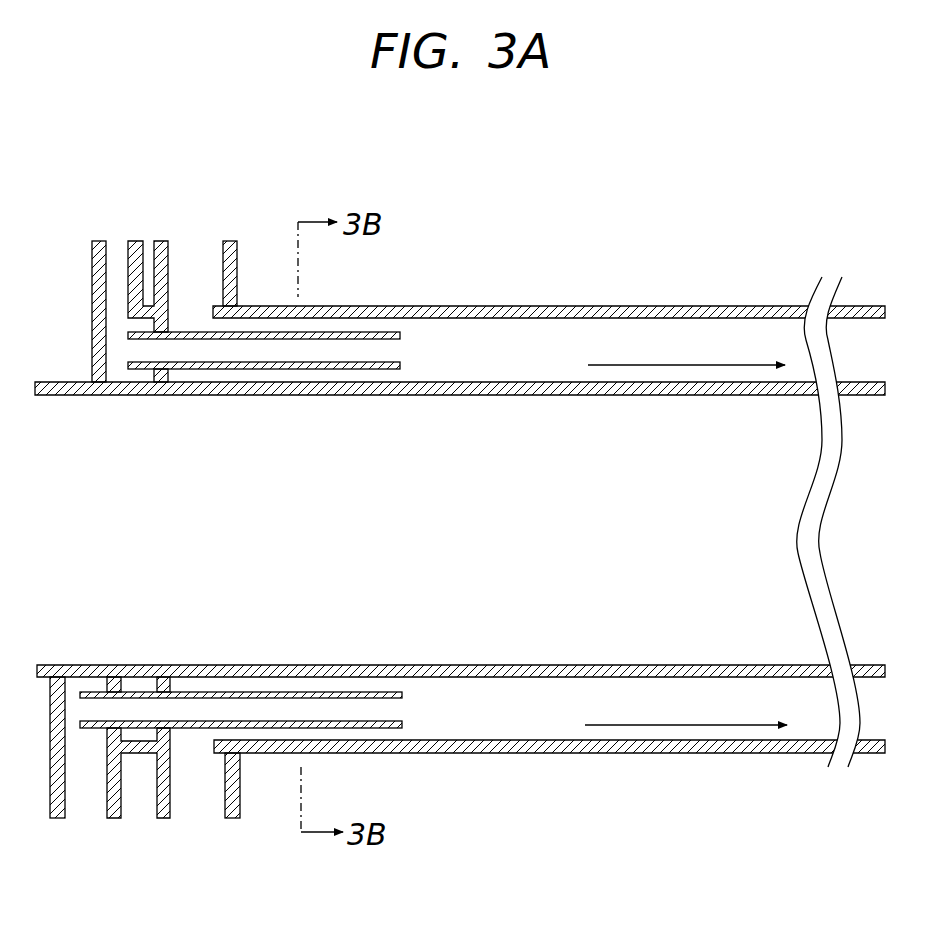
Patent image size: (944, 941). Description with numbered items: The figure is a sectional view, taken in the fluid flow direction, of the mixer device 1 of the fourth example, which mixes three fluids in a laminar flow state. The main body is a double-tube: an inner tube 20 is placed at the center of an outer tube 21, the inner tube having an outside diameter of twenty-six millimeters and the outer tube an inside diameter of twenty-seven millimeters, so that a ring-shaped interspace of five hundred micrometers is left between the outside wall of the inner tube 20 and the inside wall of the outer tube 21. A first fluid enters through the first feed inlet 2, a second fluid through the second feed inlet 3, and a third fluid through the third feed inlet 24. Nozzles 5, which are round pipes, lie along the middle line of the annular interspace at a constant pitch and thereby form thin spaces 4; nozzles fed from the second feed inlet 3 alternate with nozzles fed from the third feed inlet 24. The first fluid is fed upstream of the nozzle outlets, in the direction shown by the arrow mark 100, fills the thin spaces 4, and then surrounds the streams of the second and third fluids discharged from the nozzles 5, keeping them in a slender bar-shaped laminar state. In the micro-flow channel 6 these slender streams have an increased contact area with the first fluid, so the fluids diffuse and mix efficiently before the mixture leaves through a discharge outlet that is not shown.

The mixer device 1 is at (700, 238).
The first feed inlet 2 is at (148, 247).
The second feed inlet 3 is at (118, 247).
The thin space 4 is at (342, 375).
The nozzle 5 is at (255, 333).
The micro-flow channel 6 is at (532, 343).
The inner tube 20 is at (760, 395).
The outer tube 21 is at (757, 306).
The third feed inlet 24 is at (85, 800).
The arrow mark 100 is at (682, 365).